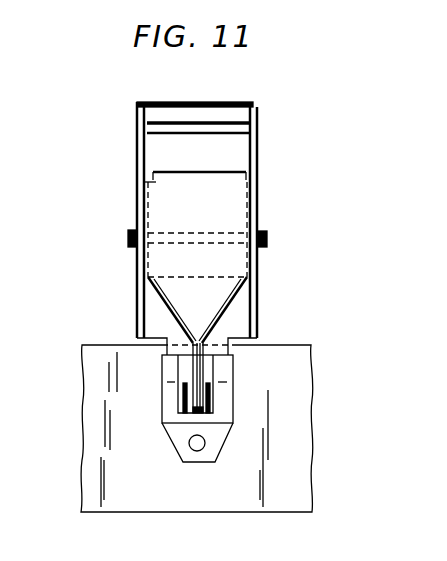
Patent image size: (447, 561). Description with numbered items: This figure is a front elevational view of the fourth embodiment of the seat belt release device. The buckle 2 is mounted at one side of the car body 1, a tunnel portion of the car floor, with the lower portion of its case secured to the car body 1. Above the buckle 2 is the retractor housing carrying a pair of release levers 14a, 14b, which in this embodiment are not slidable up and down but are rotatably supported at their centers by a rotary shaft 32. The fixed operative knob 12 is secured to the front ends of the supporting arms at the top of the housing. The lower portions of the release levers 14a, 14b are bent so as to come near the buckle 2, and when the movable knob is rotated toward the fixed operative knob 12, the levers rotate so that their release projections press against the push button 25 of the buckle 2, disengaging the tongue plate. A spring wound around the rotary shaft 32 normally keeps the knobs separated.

The car body 1 is at (295, 481).
The buckle 2 is at (222, 410).
The fixed operative knob 12 is at (240, 110).
The release lever 14a is at (137, 293).
The release lever 14b is at (260, 280).
The push button 25 is at (210, 402).
The rotary shaft 32 is at (268, 236).